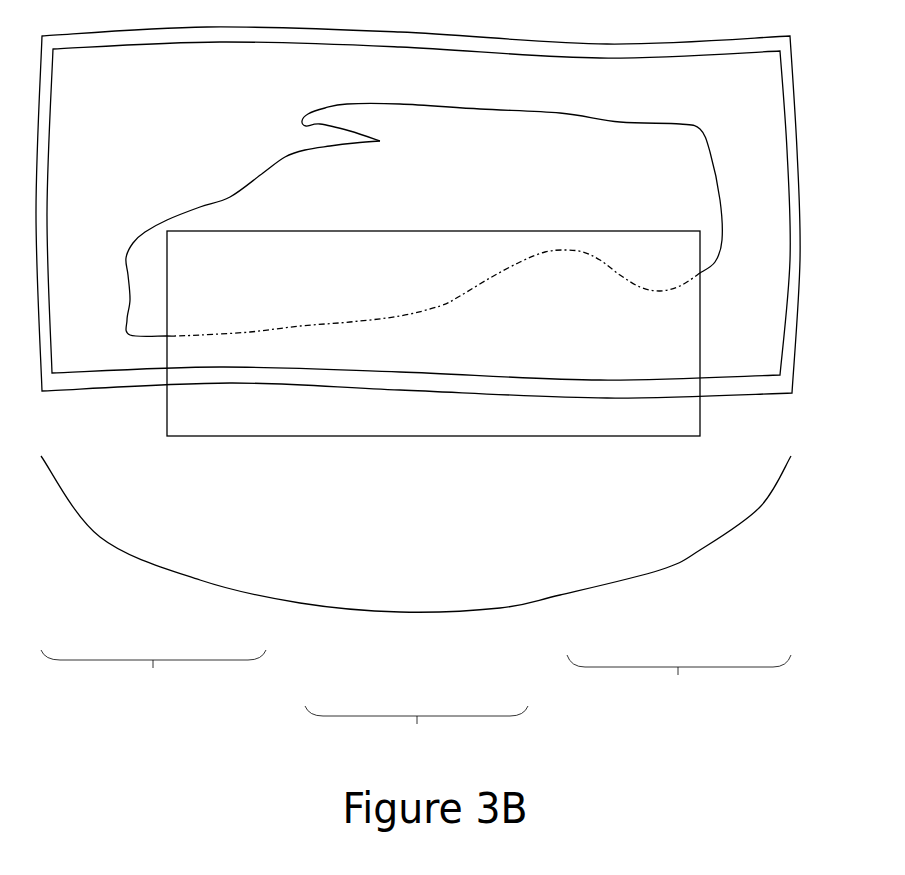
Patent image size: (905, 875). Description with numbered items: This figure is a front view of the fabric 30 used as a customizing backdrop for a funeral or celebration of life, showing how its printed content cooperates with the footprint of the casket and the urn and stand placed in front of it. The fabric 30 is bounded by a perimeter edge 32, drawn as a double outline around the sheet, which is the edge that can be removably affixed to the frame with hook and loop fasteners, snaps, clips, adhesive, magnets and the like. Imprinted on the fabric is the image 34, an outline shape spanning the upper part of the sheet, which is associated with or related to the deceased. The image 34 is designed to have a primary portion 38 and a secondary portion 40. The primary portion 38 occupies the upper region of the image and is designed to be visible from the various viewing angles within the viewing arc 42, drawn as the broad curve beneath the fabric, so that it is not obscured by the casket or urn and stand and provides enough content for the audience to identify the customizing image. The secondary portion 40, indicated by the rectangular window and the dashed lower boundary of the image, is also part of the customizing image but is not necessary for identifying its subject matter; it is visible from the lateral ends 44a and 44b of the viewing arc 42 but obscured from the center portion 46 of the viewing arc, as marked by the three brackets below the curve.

The fabric 30 is at (790, 160).
The perimeter edge 32 is at (792, 208).
The image 34 is at (593, 115).
The primary portion 38 is at (117, 99).
The secondary portion 40 is at (587, 277).
The viewing arc 42 is at (658, 570).
The lateral end of the viewing arc 44a is at (153, 674).
The lateral end of the viewing arc 44b is at (679, 679).
The center portion of the viewing arc 46 is at (416, 730).